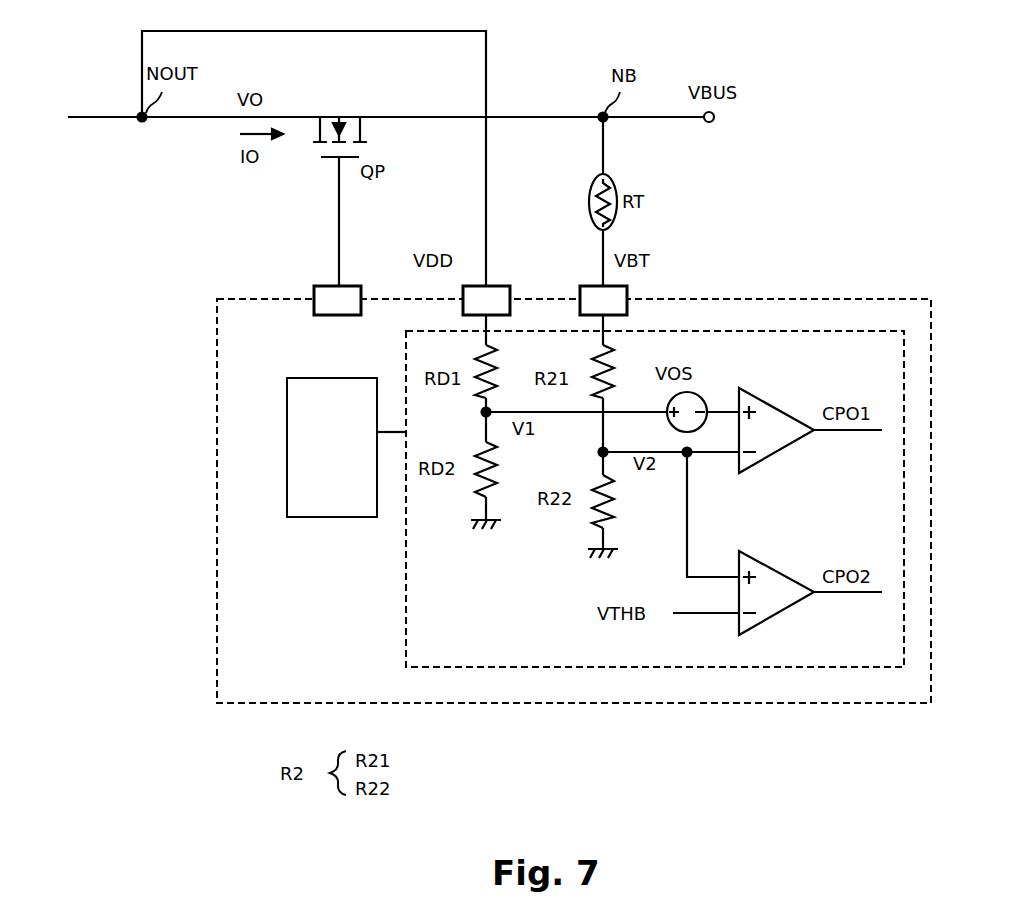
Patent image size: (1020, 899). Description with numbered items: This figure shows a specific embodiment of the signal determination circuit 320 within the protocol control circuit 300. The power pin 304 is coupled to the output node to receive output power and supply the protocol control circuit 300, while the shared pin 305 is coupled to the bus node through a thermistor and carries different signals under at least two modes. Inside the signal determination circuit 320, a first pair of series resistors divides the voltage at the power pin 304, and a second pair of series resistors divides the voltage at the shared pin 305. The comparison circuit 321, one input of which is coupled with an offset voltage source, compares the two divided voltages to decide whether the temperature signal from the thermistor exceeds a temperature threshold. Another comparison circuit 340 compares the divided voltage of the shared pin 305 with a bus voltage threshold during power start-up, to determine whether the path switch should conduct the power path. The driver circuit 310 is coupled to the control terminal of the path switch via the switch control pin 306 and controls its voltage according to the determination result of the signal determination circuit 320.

The protocol control circuit 300 is at (290, 660).
The power pin 304 is at (470, 312).
The shared pin 305 is at (587, 312).
The switch control pin 306 is at (321, 312).
The driver circuit 310 is at (355, 505).
The signal determination circuit 320 is at (493, 627).
The comparison circuit 321 is at (770, 395).
The comparison circuit 340 is at (770, 562).